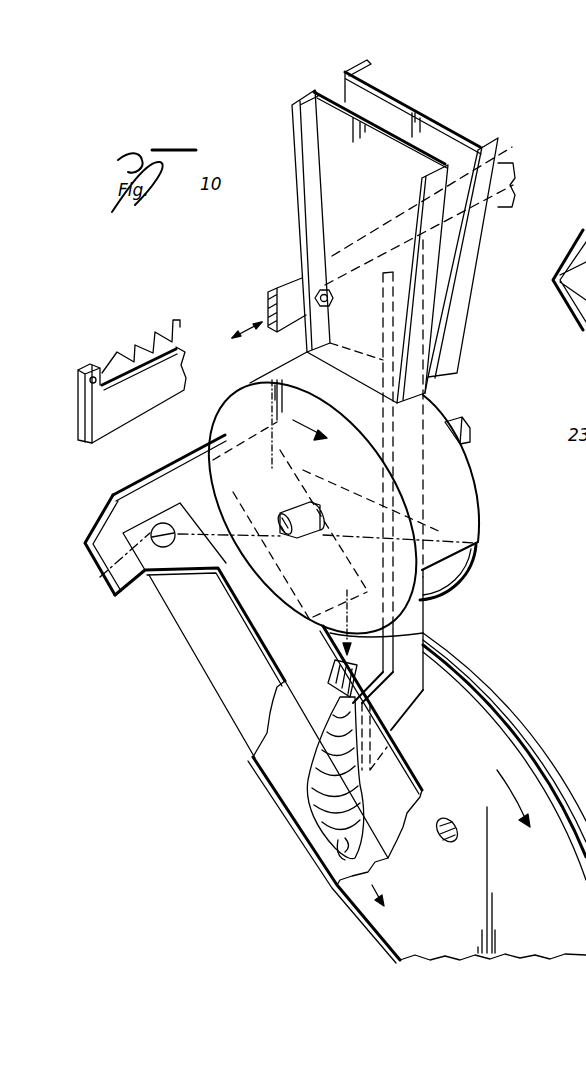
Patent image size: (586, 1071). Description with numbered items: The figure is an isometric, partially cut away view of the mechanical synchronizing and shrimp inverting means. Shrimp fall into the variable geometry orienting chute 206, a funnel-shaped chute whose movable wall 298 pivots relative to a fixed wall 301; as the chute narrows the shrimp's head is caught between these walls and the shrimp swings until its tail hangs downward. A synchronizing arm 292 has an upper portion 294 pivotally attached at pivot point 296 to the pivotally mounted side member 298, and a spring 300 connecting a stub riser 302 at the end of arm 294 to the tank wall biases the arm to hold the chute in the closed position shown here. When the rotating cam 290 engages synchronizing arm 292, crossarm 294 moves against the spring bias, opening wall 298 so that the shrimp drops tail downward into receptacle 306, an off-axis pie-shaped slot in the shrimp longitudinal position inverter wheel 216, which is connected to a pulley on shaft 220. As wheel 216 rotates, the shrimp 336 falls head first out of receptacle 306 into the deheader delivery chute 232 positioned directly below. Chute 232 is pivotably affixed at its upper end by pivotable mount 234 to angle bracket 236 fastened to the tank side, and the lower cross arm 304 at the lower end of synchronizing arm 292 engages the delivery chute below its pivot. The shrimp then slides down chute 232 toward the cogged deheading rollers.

The variable geometry orienting chute 206 is at (389, 110).
The fixed wall 301 is at (500, 151).
The pivotally mounted side member 298 is at (428, 196).
The upper portion of synchronizing arm 294 is at (292, 297).
The pivot point 296 is at (332, 300).
The spring 300 is at (154, 333).
The stub riser 302 is at (88, 370).
The shaft 220 is at (456, 422).
The shrimp longitudinal position inverter wheel 216 is at (452, 482).
The receptacle 306 is at (452, 562).
The synchronizing arm 292 is at (417, 618).
The lower cross arm 304 is at (400, 707).
The angle bracket 236 is at (98, 540).
The pivotable mount 234 is at (108, 578).
The deheader delivery chute 232 is at (207, 645).
The shrimp 336 is at (312, 803).
The cam 290 is at (490, 740).